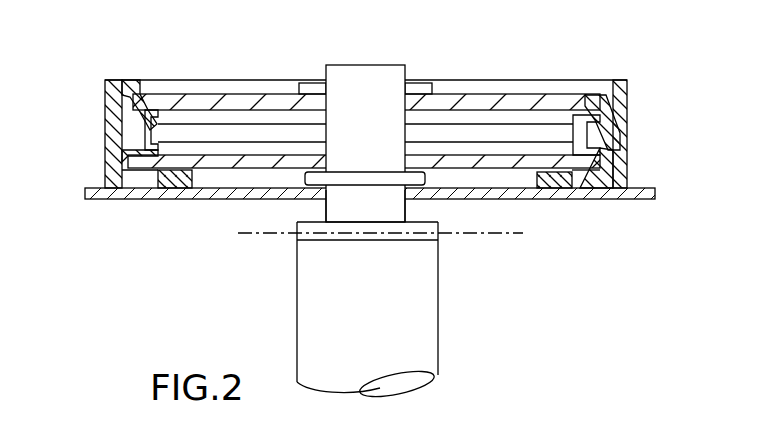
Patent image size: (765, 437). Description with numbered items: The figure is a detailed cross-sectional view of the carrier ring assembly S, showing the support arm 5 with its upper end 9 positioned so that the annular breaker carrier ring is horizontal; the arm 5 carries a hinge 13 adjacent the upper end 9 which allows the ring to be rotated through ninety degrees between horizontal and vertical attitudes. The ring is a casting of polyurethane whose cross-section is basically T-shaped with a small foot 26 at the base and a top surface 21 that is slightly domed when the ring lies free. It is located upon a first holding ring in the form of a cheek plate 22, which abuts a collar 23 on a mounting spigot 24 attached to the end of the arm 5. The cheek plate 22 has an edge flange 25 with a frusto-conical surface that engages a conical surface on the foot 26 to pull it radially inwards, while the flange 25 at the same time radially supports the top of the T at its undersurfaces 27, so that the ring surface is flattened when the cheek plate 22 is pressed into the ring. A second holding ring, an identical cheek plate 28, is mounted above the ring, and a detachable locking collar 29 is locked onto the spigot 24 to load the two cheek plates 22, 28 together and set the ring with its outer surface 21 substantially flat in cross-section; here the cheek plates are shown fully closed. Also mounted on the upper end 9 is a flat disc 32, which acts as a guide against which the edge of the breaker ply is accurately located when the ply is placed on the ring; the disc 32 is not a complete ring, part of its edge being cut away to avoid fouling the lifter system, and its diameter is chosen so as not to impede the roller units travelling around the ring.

The switch assembly S is at (360, 127).
The support arm 5 is at (380, 312).
The upper end 9 is at (333, 208).
The hinge 13 is at (422, 236).
The top surface 21 is at (627, 139).
The cheek plate 22 is at (213, 164).
The collar 23 is at (418, 178).
The mounting spigot 24 is at (387, 83).
The edge flange 25 is at (131, 160).
The foot 26 is at (155, 124).
The undersurfaces 27 is at (128, 91).
The cheek plate 28 is at (498, 99).
The locking collar 29 is at (313, 89).
The flat disc 32 is at (653, 198).